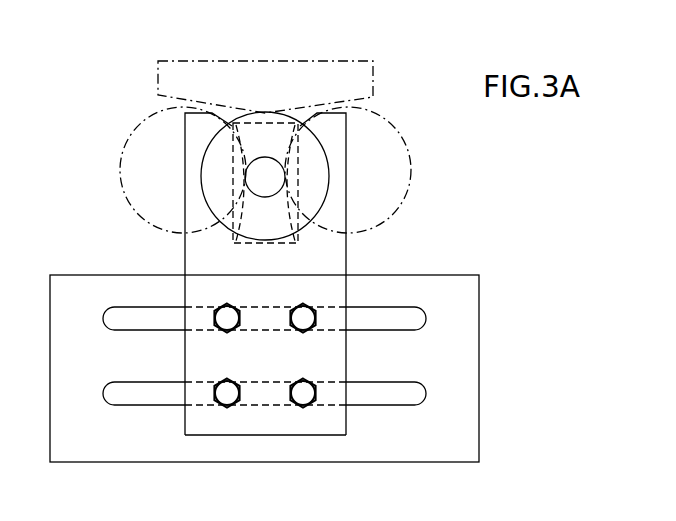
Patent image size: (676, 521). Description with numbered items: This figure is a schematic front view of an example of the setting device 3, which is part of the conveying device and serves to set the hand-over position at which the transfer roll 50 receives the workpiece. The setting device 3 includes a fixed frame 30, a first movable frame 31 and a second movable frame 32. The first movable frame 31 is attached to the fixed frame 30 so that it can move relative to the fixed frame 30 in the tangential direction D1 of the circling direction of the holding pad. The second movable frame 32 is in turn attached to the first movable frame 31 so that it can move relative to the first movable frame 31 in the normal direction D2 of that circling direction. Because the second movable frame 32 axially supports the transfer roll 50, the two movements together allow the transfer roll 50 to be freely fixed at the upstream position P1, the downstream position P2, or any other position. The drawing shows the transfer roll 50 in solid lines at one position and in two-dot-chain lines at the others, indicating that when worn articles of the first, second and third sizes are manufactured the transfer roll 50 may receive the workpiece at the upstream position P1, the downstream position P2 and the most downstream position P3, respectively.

The setting device 3 is at (427, 258).
The fixed frame 30 is at (463, 418).
The first movable frame 31 is at (199, 423).
The second movable frame 32 is at (285, 222).
The transfer roll 50 is at (110, 164).
The upstream position P1 is at (186, 91).
The downstream position P2 is at (259, 99).
The most downstream position P3 is at (343, 93).
The tangential direction D1 is at (312, 485).
The normal direction D2 is at (94, 195).